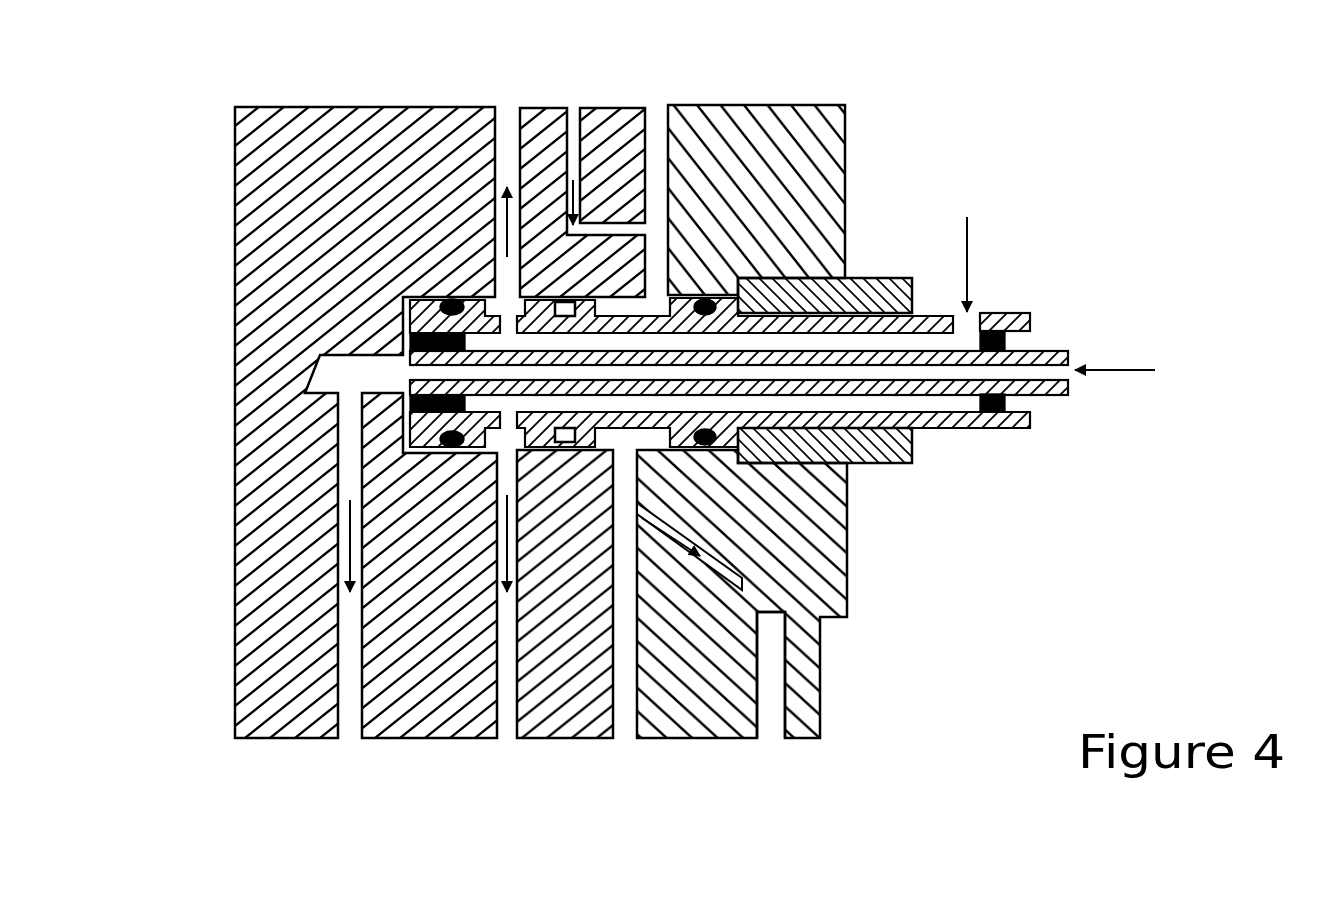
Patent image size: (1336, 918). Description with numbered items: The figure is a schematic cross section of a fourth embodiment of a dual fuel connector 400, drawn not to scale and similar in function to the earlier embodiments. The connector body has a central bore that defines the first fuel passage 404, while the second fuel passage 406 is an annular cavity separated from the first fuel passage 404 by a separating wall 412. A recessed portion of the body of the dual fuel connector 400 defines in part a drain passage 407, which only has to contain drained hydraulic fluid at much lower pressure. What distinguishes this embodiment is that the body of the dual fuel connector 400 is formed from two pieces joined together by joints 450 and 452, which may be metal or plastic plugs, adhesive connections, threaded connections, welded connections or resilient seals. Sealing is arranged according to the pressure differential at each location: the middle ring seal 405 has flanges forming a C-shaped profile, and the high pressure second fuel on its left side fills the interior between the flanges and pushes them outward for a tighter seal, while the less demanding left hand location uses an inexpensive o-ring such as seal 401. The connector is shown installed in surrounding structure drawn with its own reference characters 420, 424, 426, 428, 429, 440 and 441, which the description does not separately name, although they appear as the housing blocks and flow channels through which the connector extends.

The dual fuel connector 400 is at (992, 313).
The seal 401 is at (555, 302).
The first fuel passage 404 is at (943, 403).
The middle ring seal 405 is at (450, 300).
The second fuel passage 406 is at (890, 372).
The drain passage 407 is at (640, 300).
The separating wall 412 is at (913, 385).
The housing block 420 is at (340, 283).
The seal 424 is at (388, 363).
The outlet channel 426 is at (508, 703).
The flow channel 428 is at (510, 132).
The flow channel 429 is at (572, 137).
The housing block 440 is at (805, 592).
The outlet channel 441 is at (765, 672).
The joint 450 is at (1007, 342).
The joint 452 is at (400, 388).